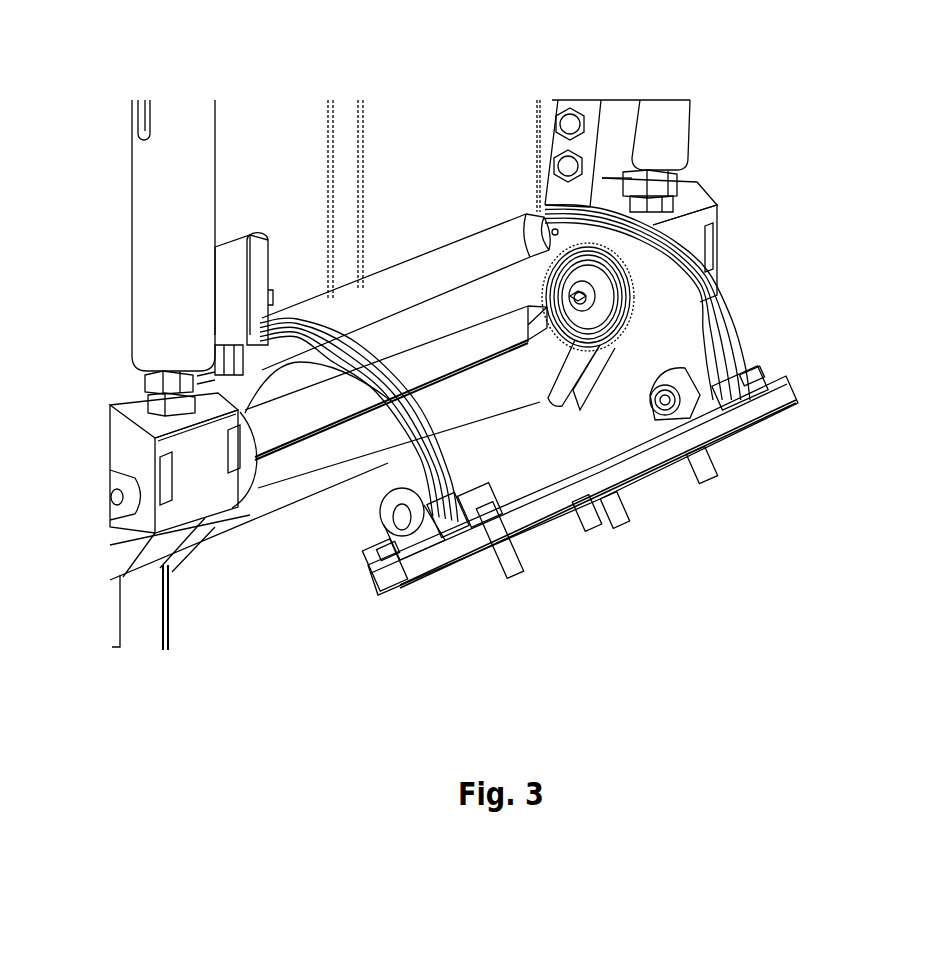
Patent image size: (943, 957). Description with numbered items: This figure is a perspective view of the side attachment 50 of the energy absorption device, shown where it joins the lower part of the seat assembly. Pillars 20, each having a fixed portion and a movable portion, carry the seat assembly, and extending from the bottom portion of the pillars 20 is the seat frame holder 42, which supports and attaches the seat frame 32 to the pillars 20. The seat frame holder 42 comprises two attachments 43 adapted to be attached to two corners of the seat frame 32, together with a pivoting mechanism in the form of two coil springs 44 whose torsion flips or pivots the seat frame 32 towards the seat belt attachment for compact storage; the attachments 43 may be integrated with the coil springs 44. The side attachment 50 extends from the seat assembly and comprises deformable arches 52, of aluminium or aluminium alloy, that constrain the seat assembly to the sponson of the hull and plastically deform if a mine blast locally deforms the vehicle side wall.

The pillar 20 is at (163, 228).
The seat frame 32 is at (486, 407).
The seat frame holder 42 is at (300, 530).
The attachment 43 is at (138, 413).
The coil spring 44 is at (598, 372).
The side attachment 50 is at (813, 436).
The deformable arch 52 is at (392, 465).